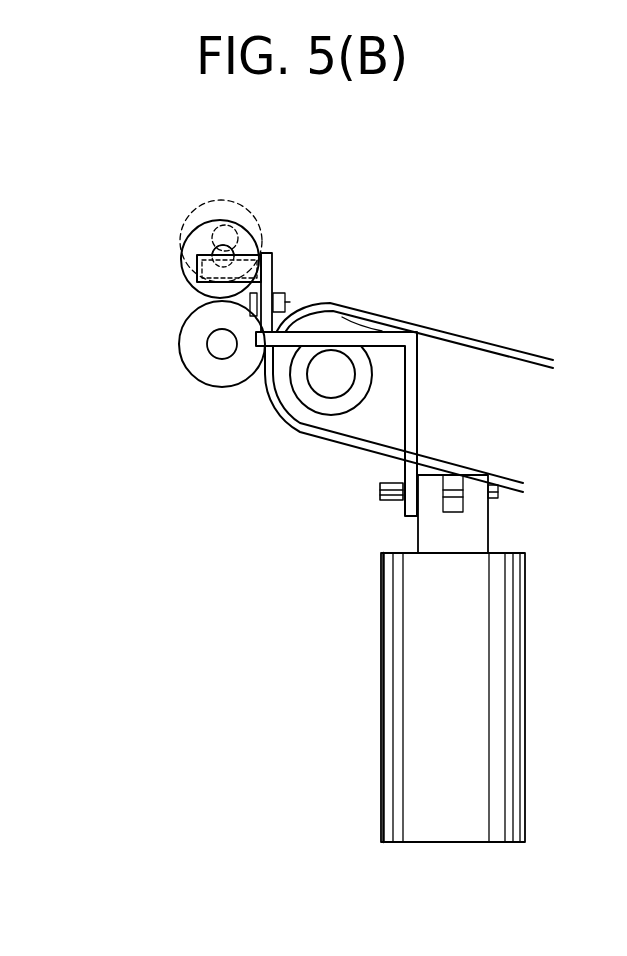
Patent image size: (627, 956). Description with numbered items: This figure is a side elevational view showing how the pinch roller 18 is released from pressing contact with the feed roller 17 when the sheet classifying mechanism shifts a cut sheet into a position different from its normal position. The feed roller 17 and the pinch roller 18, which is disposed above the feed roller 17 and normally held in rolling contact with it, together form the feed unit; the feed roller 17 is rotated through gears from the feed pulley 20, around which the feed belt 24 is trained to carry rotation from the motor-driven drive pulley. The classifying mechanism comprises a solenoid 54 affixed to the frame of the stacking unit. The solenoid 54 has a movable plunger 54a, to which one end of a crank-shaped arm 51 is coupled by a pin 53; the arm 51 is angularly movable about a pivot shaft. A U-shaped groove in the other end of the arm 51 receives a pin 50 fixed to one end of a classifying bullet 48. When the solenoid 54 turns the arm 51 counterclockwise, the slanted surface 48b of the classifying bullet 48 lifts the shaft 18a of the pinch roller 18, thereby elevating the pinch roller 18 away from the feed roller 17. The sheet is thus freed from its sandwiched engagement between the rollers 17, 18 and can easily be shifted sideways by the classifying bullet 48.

The feed roller 17 is at (200, 355).
The pinch roller 18 is at (180, 268).
The shaft 18a is at (224, 252).
The feed pulley 20 is at (300, 412).
The feed belt 24 is at (457, 338).
The classifying bullet 48 is at (278, 280).
The slanted surface 48b is at (262, 238).
The pin 50 is at (283, 302).
The crank-shaped arm 51 is at (410, 397).
The pin 53 is at (382, 502).
The solenoid 54 is at (381, 691).
The movable plunger 54a is at (478, 528).